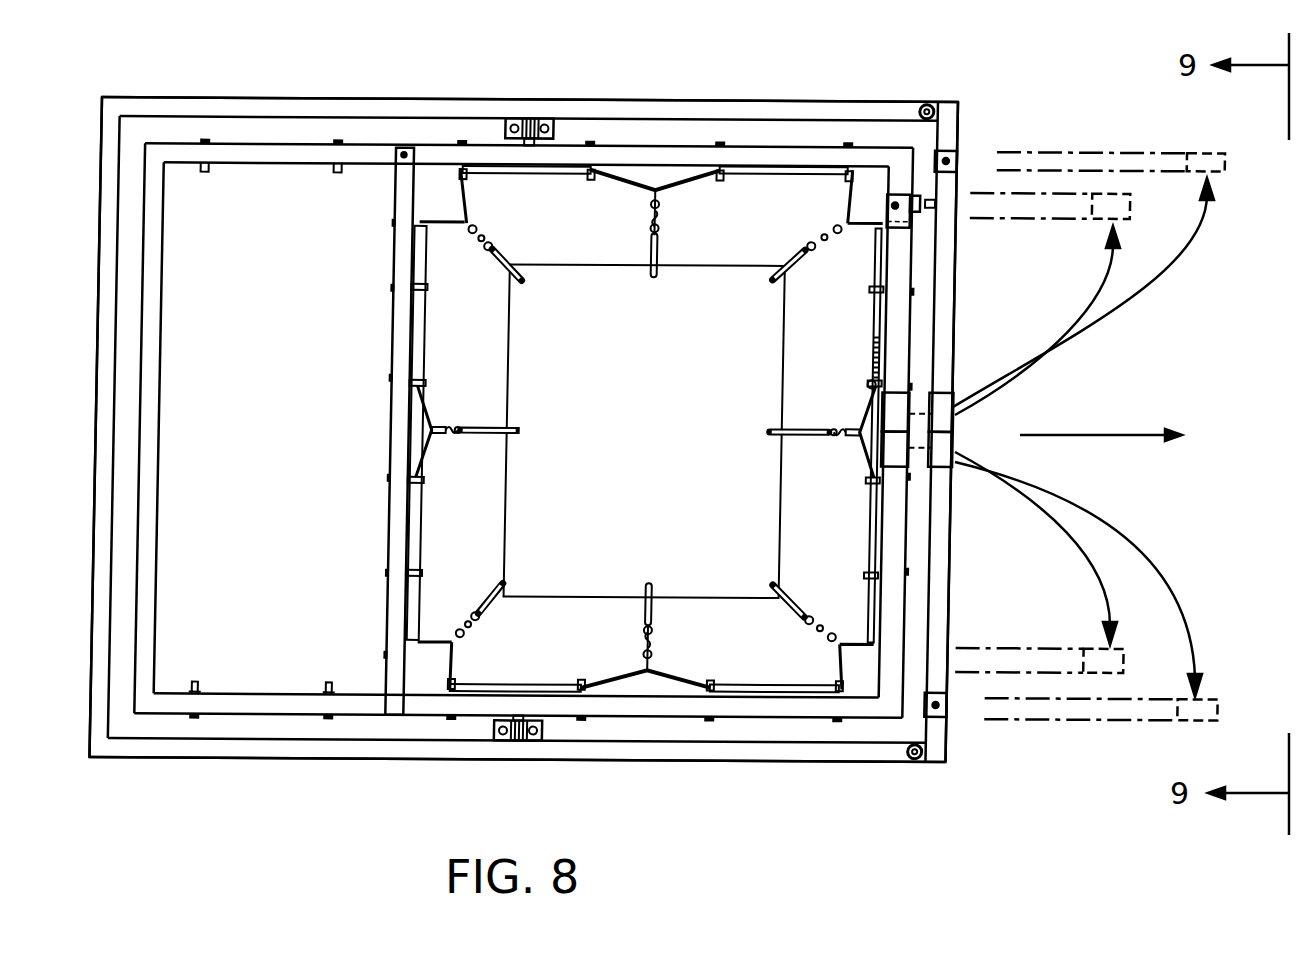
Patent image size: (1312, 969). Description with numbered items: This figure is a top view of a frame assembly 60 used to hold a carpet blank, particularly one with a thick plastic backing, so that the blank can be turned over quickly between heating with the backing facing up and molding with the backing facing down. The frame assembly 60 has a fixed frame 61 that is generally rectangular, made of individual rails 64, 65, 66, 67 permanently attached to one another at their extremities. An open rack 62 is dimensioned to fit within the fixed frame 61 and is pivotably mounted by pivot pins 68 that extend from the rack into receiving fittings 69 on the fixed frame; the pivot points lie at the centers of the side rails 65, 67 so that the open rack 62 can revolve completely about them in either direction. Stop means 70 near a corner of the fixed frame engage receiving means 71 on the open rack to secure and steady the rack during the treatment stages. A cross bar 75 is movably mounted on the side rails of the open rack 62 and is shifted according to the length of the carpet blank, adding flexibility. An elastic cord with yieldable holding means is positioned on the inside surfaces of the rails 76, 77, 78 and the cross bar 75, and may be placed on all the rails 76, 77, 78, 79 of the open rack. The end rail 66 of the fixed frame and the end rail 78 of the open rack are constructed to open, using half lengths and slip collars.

The frame assembly 60 is at (310, 97).
The fixed frame 61 is at (840, 100).
The open rack 62 is at (230, 693).
The rail 64 is at (100, 402).
The side rail 65 is at (633, 112).
The end rail 66 is at (100, 150).
The side rail 67 is at (730, 762).
The pivot pin 68 is at (553, 140).
The receiving fitting 69 is at (527, 122).
The stop means 70 is at (930, 208).
The receiving means 71 is at (917, 212).
The cross bar 75 is at (390, 410).
The rail 76 is at (622, 162).
The rail 77 is at (485, 705).
The end rail 78 is at (893, 518).
The rail 79 is at (155, 415).